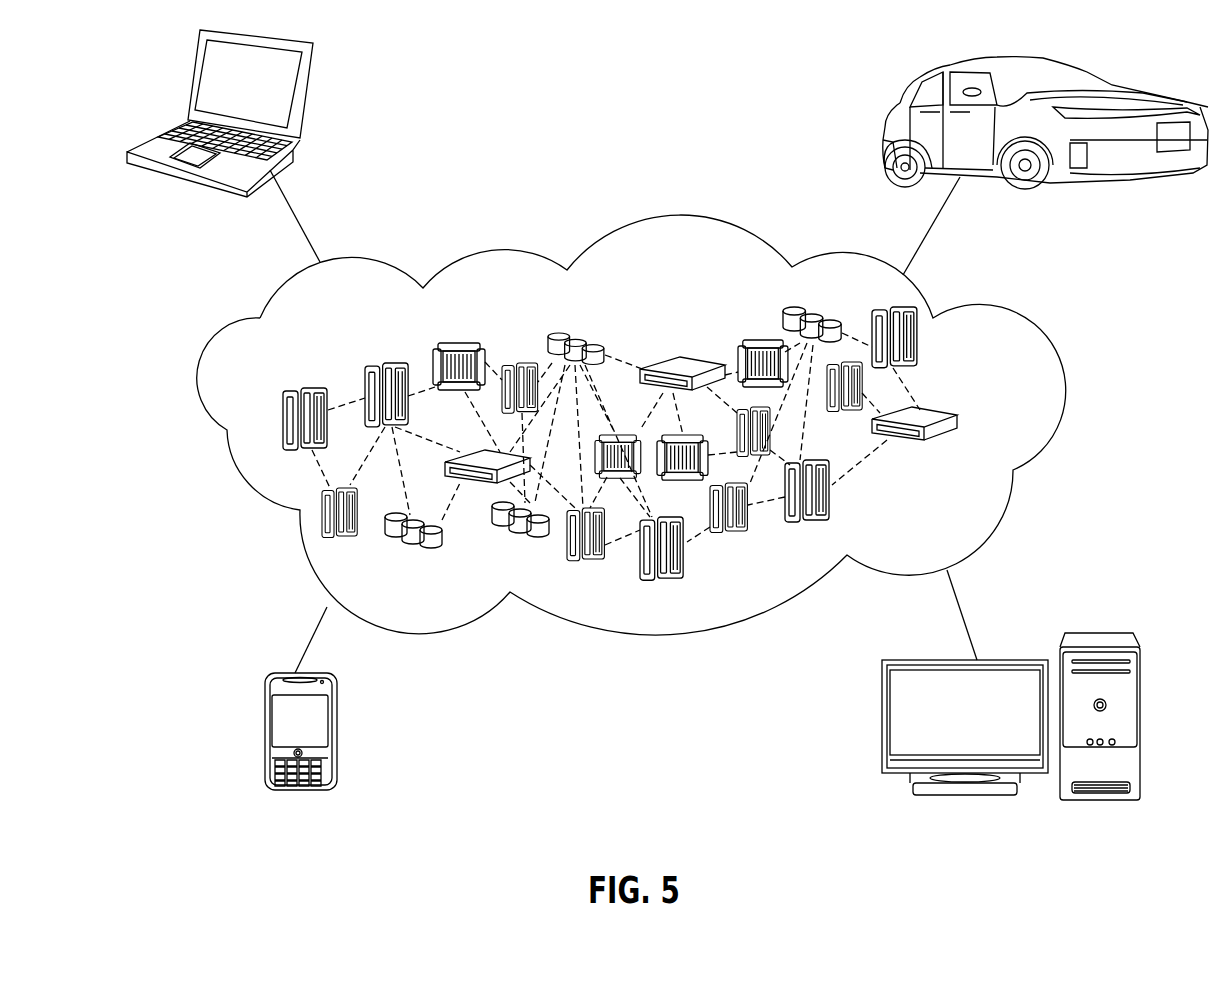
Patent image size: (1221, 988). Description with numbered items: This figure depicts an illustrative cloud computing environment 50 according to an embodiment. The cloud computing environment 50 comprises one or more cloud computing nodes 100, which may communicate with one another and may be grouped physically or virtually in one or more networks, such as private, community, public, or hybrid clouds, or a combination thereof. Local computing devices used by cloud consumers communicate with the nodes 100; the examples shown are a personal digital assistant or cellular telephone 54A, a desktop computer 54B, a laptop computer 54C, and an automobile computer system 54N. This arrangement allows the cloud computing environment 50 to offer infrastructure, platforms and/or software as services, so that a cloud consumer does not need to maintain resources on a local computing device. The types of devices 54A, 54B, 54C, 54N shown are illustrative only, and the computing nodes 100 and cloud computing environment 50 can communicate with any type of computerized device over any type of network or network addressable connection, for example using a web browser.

The cloud computing environment 50 is at (1022, 333).
The cloud computing nodes 100 is at (1002, 423).
The personal digital assistant or cellular telephone 54A is at (263, 737).
The desktop computer 54B is at (1105, 635).
The laptop computer 54C is at (308, 98).
The automobile computer system 54N is at (892, 108).